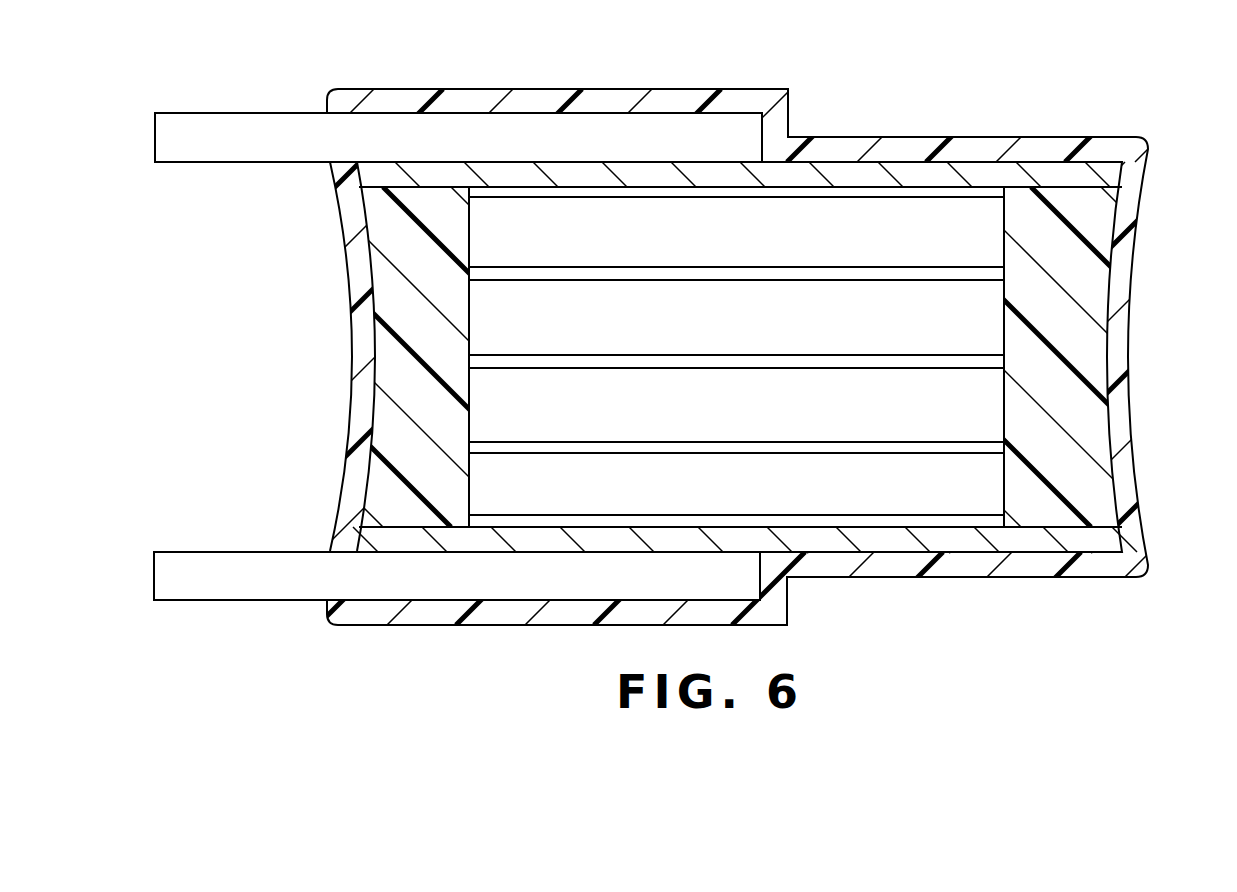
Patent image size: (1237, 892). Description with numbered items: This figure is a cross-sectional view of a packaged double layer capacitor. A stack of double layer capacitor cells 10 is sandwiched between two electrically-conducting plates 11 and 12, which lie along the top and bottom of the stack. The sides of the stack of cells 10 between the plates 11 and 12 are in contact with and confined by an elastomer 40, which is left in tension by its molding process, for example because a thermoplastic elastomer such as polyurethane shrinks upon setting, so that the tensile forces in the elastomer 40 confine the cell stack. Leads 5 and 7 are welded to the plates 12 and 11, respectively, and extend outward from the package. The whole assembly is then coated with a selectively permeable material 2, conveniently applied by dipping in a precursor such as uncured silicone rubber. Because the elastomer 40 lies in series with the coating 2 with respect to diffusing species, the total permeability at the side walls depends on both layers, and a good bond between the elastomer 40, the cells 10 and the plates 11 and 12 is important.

The selectively permeable material 2 is at (1115, 430).
The lead 5 is at (258, 584).
The lead 7 is at (258, 132).
The double layer capacitor cells 10 is at (987, 248).
The electrically-conducting plate 11 is at (1040, 170).
The electrically-conducting plate 12 is at (955, 538).
The elastomer 40 is at (1062, 515).